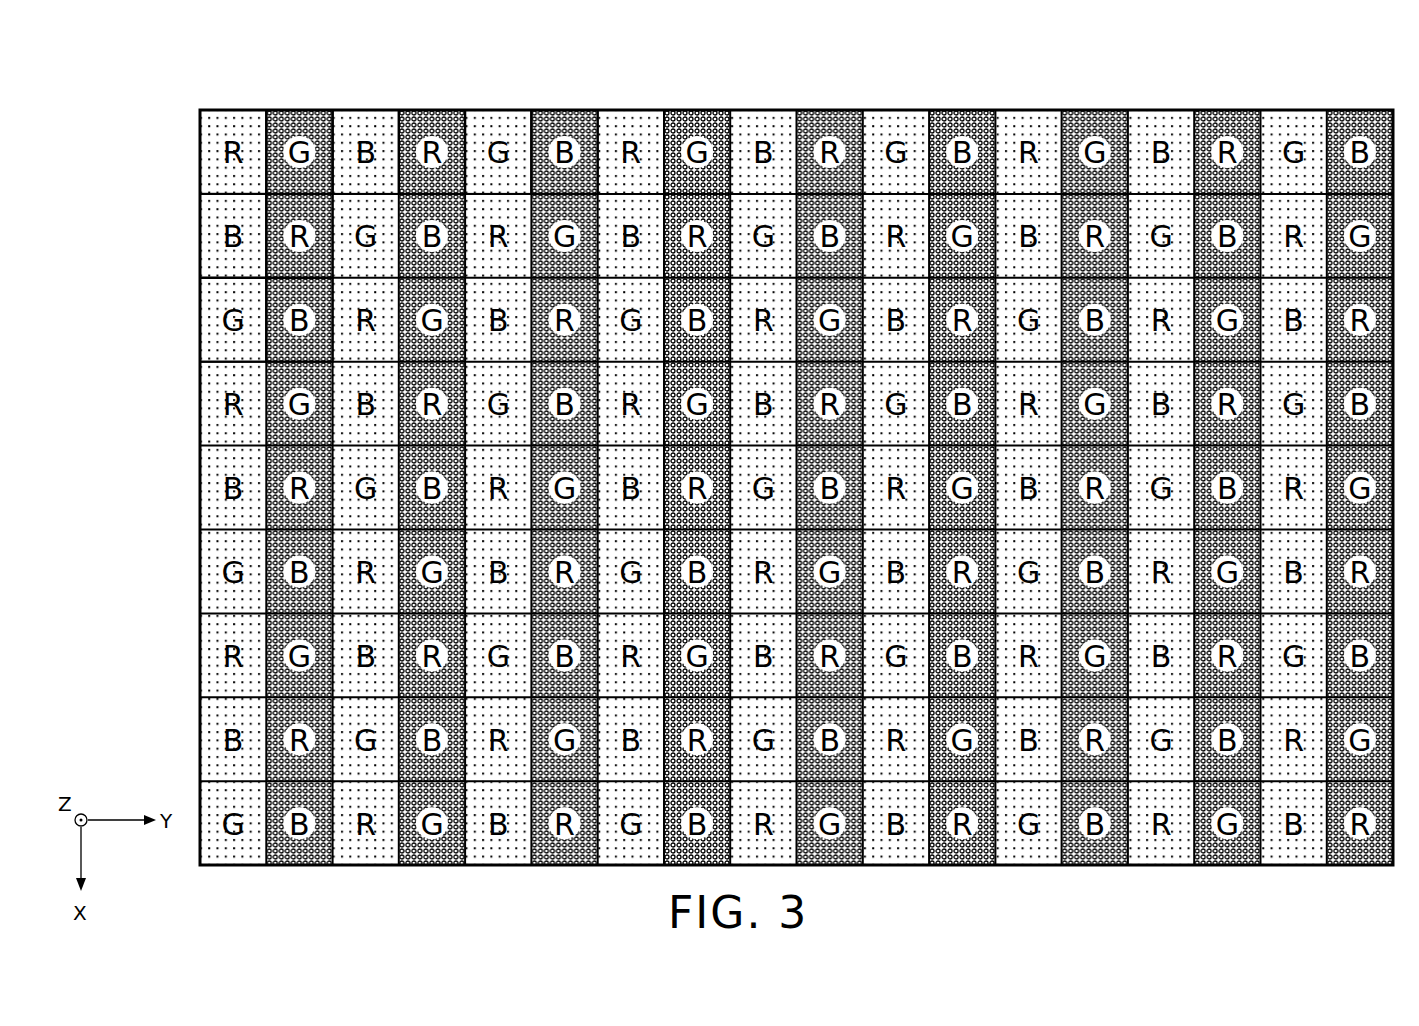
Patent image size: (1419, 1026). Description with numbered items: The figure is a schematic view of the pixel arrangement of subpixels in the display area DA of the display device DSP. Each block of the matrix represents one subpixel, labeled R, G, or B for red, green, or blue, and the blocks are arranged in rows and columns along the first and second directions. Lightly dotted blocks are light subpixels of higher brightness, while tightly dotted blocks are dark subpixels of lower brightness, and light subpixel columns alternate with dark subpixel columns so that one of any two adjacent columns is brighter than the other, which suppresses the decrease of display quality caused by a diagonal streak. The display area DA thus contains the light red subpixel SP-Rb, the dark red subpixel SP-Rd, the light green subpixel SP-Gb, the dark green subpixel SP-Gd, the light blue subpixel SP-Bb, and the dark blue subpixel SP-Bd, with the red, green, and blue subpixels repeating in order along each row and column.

The display device DSP is at (843, 86).
The display area DA is at (993, 86).
The subpixel SPRb SP-Rb is at (224, 108).
The subpixel SPGd SP-Gd is at (290, 108).
The subpixel SPBb SP-Bb is at (358, 108).
The subpixel SPRd SP-Rd is at (425, 108).
The subpixel SPGb SP-Gb is at (493, 108).
The subpixel SPBd SP-Bd is at (558, 108).